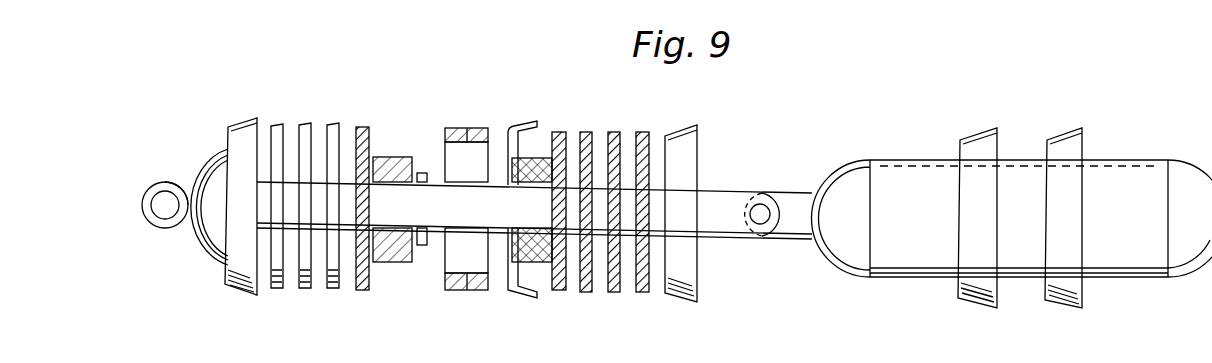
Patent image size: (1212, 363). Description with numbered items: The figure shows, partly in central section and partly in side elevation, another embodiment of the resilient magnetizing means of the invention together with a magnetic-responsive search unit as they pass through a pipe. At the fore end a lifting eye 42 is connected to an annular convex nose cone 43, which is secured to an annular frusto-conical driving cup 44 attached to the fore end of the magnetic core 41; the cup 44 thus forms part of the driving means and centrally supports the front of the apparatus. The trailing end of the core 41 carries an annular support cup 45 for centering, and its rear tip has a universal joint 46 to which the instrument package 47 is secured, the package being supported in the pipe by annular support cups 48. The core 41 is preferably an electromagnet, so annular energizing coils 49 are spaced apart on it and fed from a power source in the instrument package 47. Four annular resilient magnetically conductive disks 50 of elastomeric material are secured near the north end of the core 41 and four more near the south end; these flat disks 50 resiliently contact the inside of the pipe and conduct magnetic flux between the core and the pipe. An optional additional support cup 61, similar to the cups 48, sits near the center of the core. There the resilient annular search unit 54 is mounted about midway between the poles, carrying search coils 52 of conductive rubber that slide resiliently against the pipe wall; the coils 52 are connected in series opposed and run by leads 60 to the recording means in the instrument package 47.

The magnetic core 41 is at (534, 210).
The lifting eye 42 is at (144, 219).
The annular convex nose cone 43 is at (193, 175).
The annular frusto-conical shaped driving cup 44 is at (243, 120).
The annular support cup 45 is at (700, 147).
The universal joint 46 is at (762, 192).
The instrument package 47 is at (1128, 160).
The annular support cups 48 is at (966, 140).
The annular energizing coils 49 is at (388, 157).
The annular resilient magnetically conductive disks 50 is at (341, 122).
The search coils 52 is at (454, 128).
The search unit 54 is at (476, 150).
The leads 60 is at (430, 173).
The additional support cup 61 is at (516, 128).